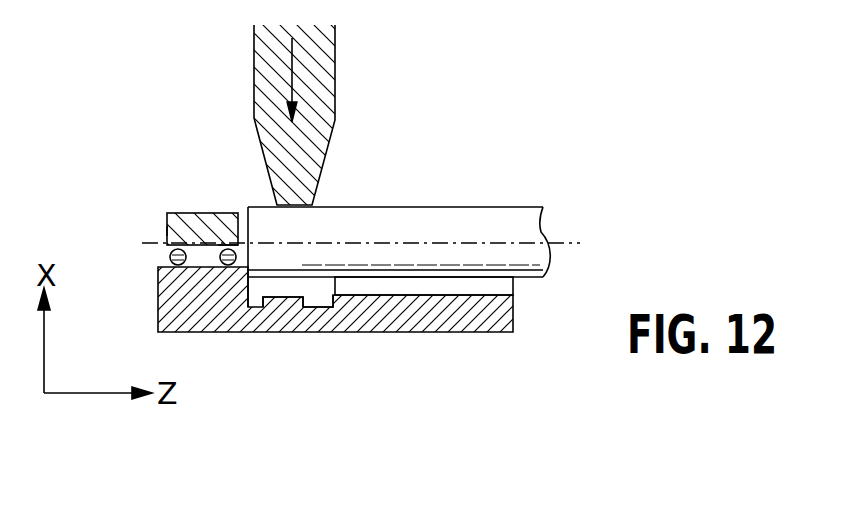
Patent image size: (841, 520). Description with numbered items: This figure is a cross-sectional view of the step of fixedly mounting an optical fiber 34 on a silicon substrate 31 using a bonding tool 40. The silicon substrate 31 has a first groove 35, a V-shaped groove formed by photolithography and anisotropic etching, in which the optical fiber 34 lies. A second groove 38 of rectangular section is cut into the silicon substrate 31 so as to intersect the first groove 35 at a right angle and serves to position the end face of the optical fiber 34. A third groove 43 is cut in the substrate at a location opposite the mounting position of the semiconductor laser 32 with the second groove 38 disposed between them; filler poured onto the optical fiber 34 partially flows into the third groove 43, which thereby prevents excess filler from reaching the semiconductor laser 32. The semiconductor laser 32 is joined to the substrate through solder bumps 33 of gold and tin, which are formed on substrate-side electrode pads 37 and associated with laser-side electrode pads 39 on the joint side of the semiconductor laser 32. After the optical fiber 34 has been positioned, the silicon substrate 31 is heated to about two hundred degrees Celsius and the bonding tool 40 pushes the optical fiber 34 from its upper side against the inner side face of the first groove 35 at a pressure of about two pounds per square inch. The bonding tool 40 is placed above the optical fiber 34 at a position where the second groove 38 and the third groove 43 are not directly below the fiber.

The silicon substrate 31 is at (325, 332).
The semiconductor laser 32 is at (192, 212).
The solder bumps 33 is at (223, 213).
The optical fiber 34 is at (445, 207).
The first groove 35 is at (415, 297).
The substrate-side electrode pads 37 is at (228, 268).
The second groove 38 is at (260, 300).
The laser-side electrode pads 39 is at (165, 230).
The bonding tool 40 is at (318, 80).
The third groove 43 is at (330, 300).